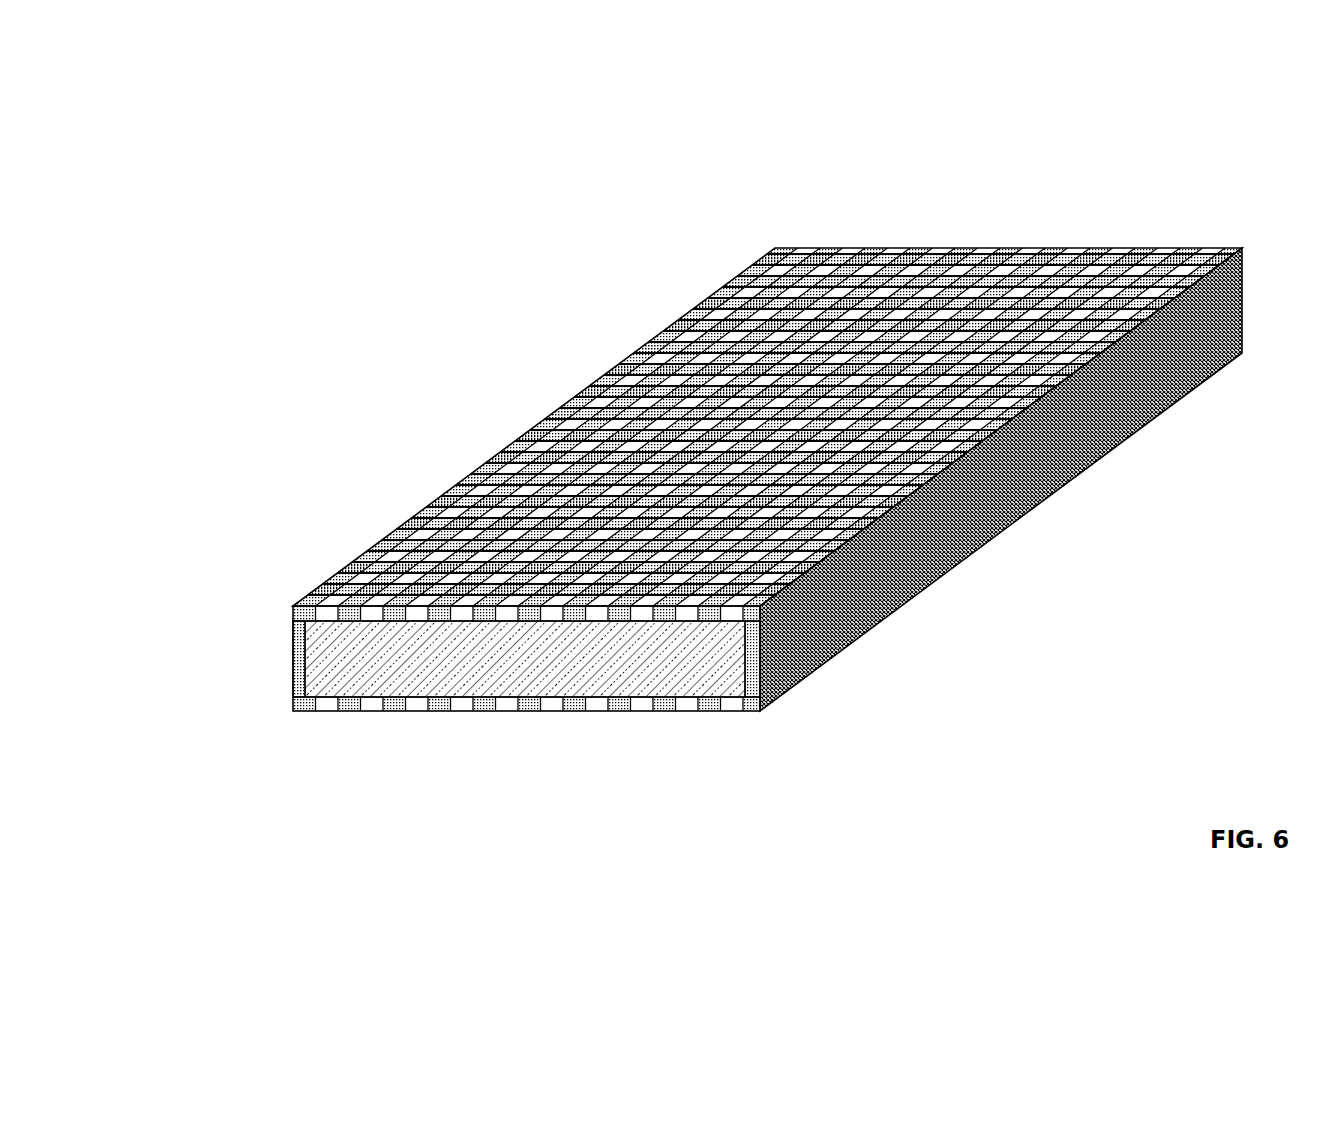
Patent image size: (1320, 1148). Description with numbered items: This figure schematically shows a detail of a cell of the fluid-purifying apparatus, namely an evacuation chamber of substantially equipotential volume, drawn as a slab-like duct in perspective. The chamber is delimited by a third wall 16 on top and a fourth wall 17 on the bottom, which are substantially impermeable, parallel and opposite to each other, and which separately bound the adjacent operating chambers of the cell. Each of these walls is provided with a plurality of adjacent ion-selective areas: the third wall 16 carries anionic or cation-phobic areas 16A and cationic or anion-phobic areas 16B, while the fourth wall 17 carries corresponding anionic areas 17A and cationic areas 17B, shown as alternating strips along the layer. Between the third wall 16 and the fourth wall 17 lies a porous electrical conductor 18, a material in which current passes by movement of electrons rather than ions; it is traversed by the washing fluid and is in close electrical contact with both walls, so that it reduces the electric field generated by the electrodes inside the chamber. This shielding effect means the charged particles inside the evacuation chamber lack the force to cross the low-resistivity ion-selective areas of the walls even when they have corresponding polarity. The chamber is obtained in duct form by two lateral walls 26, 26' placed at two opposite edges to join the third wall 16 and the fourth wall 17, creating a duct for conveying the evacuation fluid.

The third wall 16 is at (660, 475).
The anionic ion-selective area of the third wall 16A is at (330, 607).
The cationic ion-selective area of the third wall 16B is at (648, 362).
The fourth wall 17 is at (488, 784).
The anionic ion-selective area of the fourth wall 17A is at (325, 703).
The cationic ion-selective area of the fourth wall 17B is at (395, 710).
The porous electrical conductor 18 is at (460, 645).
The lateral wall 26 is at (206, 659).
The lateral wall 26' is at (1001, 513).